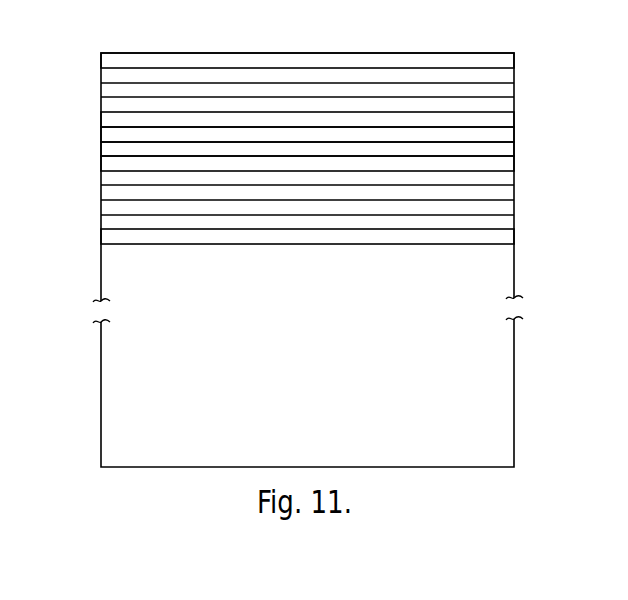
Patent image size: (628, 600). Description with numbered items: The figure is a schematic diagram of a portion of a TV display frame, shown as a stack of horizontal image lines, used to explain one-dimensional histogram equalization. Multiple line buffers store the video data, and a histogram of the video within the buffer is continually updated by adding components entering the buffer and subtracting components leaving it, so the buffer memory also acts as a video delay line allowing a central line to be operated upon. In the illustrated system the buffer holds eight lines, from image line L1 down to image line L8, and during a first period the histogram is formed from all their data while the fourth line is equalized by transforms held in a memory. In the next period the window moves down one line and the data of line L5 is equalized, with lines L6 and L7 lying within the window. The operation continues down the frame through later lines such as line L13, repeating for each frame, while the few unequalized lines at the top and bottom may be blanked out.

The image line L1 is at (514, 60).
The image line L5 is at (514, 120).
The image line L6 is at (514, 137).
The image line L7 is at (514, 150).
The image line L8 is at (514, 165).
The image line L13 is at (514, 238).